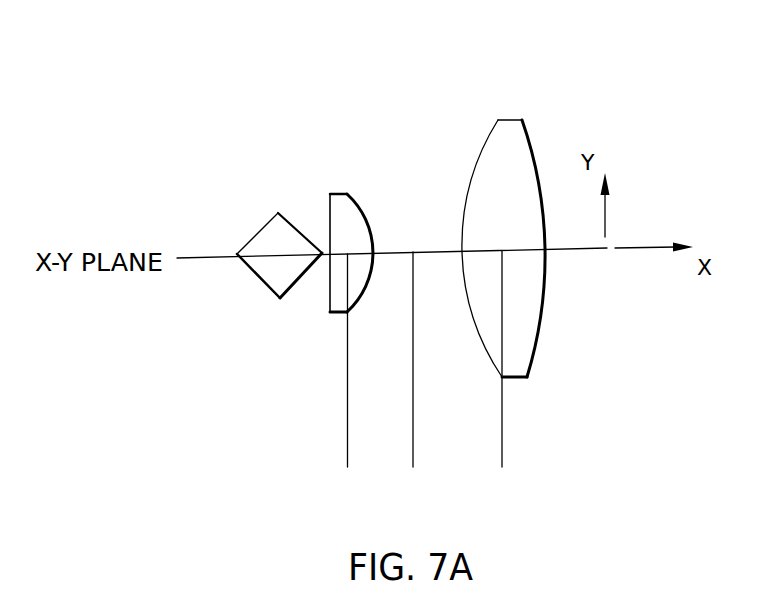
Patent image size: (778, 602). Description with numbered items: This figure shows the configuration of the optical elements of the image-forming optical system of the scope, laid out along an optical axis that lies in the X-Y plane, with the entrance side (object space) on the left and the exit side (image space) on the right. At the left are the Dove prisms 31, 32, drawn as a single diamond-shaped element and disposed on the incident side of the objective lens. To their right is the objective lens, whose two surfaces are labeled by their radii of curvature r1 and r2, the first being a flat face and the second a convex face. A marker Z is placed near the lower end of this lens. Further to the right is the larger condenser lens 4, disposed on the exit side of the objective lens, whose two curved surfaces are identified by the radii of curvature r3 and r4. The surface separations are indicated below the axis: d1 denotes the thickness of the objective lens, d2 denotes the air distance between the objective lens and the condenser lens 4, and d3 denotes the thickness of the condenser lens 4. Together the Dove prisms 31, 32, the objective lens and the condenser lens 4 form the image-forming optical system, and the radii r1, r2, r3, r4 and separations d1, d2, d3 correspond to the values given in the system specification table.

The Dove prism 31 is at (257, 158).
The Dove prism 32 is at (279, 255).
The condenser lens 4 is at (520, 192).
The lens Z is at (327, 302).
The radius of curvature r1 is at (328, 194).
The radius of curvature r2 is at (359, 162).
The radius of curvature r3 is at (476, 192).
The radius of curvature r4 is at (534, 192).
The surface separation d1 is at (349, 378).
The surface separation d2 is at (419, 377).
The surface separation d3 is at (508, 377).